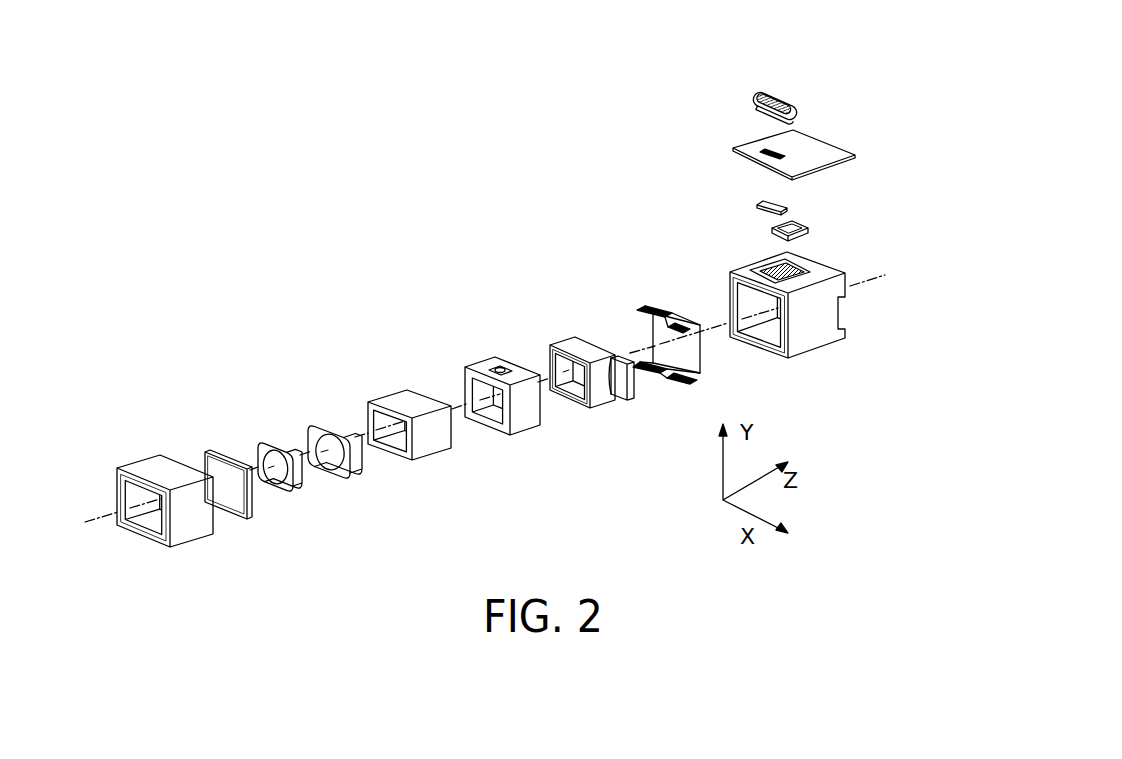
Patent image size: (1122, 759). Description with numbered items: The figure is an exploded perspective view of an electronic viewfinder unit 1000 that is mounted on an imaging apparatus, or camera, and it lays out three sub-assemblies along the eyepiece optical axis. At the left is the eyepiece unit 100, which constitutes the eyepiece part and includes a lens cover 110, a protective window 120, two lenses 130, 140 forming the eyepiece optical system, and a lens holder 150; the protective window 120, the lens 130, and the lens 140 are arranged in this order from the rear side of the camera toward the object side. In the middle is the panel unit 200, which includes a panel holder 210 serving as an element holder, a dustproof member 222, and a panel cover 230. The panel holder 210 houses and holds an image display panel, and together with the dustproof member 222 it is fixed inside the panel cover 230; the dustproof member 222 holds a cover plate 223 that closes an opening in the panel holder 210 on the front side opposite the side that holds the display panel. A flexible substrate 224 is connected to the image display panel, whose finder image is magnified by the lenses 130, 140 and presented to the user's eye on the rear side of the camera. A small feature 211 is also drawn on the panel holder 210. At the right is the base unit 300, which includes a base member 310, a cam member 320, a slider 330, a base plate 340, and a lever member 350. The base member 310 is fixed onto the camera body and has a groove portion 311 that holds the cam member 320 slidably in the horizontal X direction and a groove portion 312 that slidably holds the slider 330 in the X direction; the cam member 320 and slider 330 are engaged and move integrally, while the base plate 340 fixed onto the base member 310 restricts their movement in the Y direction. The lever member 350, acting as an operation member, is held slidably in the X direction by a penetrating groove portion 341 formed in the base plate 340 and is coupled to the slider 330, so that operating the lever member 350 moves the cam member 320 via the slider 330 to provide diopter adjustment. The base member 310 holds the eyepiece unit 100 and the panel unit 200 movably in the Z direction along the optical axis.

The electronic viewfinder unit 1000 is at (548, 122).
The eyepiece unit 100 is at (347, 289).
The lens cover 110 is at (150, 457).
The protective window 120 is at (213, 450).
The lens 130 is at (267, 443).
The lens 140 is at (323, 423).
The lens holder 150 is at (387, 398).
The panel unit 200 is at (603, 233).
The panel holder 210 is at (467, 365).
The positioning boss 211 is at (497, 363).
The dustproof member 222 is at (567, 343).
The cover plate 223 is at (570, 382).
The flexible substrate 224 is at (623, 382).
The panel cover 230 is at (638, 312).
The base unit 300 is at (897, 72).
The base member 310 is at (731, 268).
The groove portion 311 is at (807, 278).
The groove portion 312 is at (750, 265).
The cam member 320 is at (803, 232).
The slider 330 is at (778, 197).
The base plate 340 is at (735, 150).
The penetrating groove portion 341 is at (767, 153).
The lever member 350 is at (757, 97).